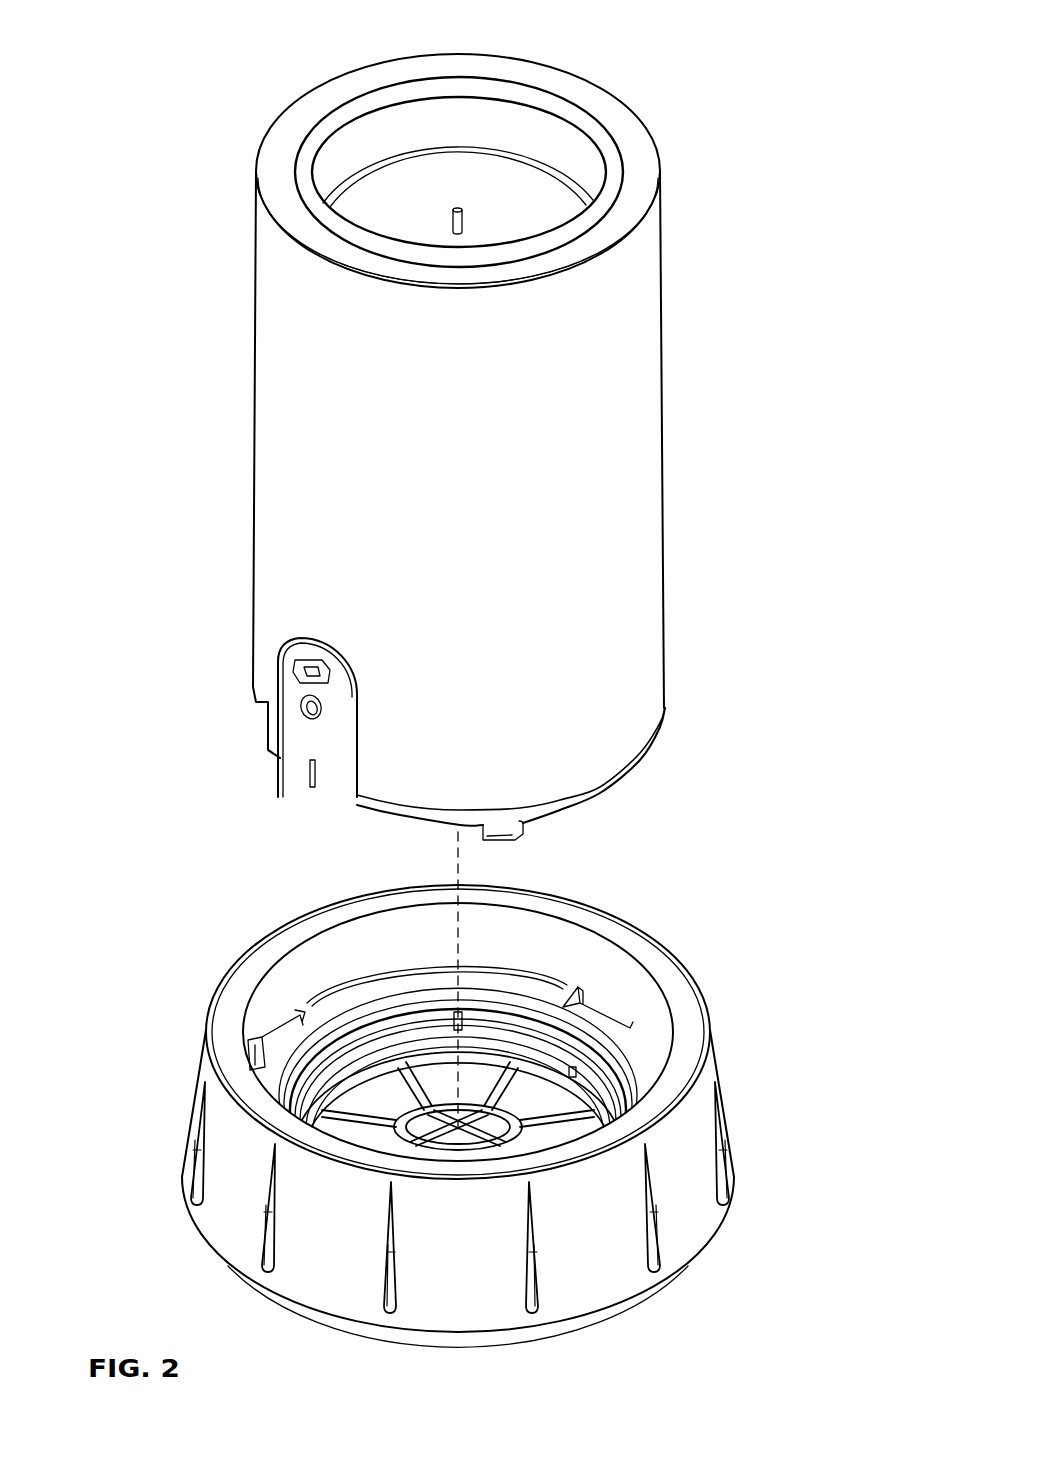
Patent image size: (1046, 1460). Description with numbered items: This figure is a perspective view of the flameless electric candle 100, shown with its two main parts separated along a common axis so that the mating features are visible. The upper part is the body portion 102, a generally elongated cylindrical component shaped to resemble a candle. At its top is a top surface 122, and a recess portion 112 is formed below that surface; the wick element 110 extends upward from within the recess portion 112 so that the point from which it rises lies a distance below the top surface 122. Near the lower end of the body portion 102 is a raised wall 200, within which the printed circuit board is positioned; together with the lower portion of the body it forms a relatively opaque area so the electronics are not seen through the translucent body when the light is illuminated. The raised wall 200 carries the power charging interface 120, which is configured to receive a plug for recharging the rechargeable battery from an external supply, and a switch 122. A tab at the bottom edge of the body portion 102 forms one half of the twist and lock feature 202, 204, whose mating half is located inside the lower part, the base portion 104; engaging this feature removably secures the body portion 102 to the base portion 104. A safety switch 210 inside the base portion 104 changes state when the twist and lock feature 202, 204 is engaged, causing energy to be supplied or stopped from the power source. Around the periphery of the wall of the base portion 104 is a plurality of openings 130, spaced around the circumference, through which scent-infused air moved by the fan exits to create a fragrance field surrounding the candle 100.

The flameless electric candle 100 is at (722, 101).
The body portion 102 is at (668, 415).
The base portion 104 is at (482, 1133).
The wick element 110 is at (466, 221).
The recess portion 112 is at (347, 141).
The power charging interface 120 is at (300, 711).
The top surface 122 is at (428, 216).
The openings 130 is at (257, 1231).
The raised wall 200 is at (300, 752).
The twist and lock feature 202 is at (516, 842).
The twist and lock feature 204 is at (600, 1010).
The safety switch 210 is at (270, 1037).